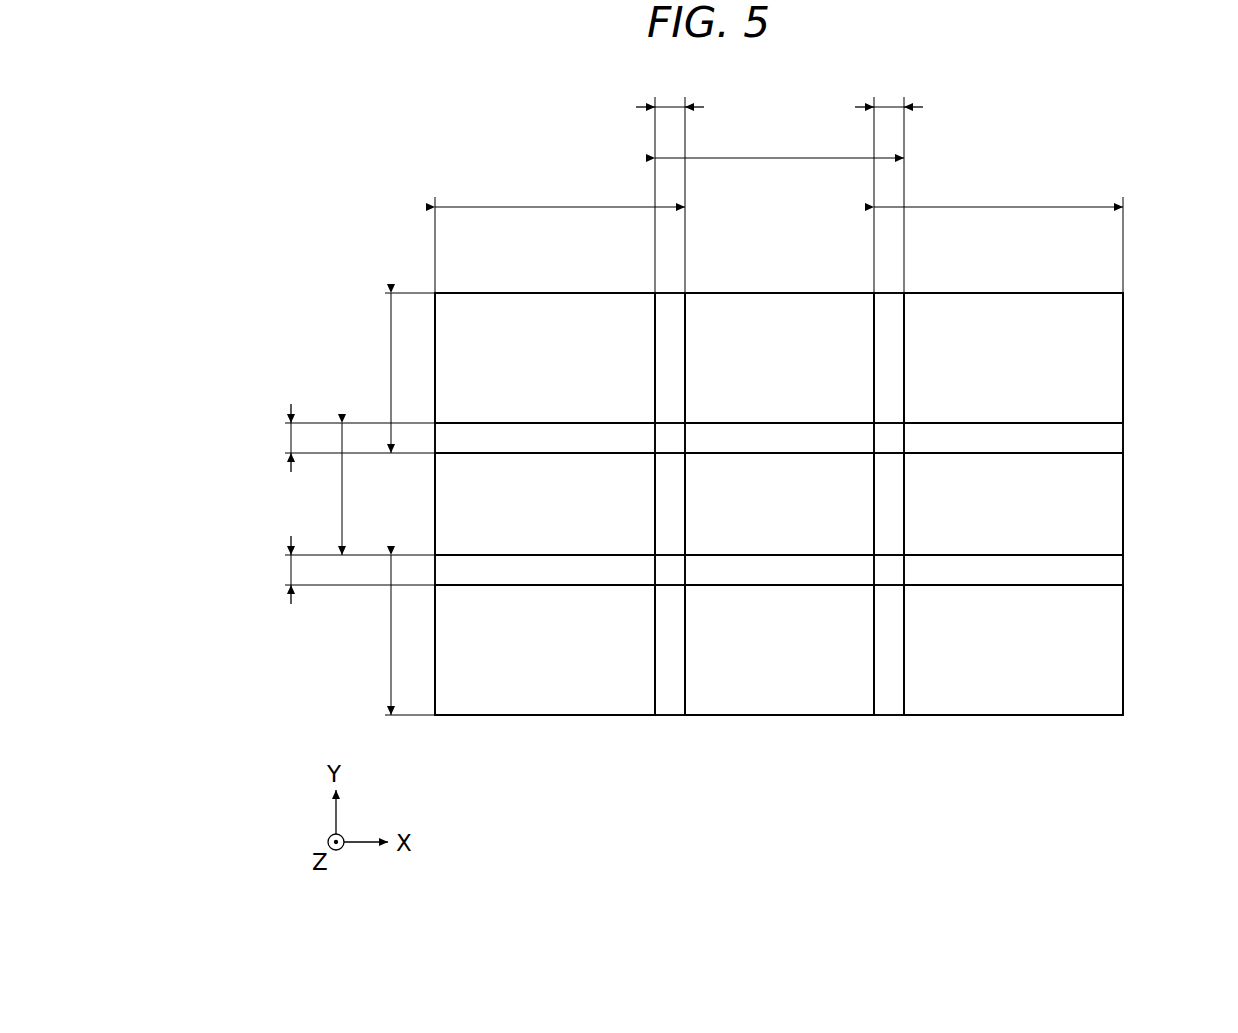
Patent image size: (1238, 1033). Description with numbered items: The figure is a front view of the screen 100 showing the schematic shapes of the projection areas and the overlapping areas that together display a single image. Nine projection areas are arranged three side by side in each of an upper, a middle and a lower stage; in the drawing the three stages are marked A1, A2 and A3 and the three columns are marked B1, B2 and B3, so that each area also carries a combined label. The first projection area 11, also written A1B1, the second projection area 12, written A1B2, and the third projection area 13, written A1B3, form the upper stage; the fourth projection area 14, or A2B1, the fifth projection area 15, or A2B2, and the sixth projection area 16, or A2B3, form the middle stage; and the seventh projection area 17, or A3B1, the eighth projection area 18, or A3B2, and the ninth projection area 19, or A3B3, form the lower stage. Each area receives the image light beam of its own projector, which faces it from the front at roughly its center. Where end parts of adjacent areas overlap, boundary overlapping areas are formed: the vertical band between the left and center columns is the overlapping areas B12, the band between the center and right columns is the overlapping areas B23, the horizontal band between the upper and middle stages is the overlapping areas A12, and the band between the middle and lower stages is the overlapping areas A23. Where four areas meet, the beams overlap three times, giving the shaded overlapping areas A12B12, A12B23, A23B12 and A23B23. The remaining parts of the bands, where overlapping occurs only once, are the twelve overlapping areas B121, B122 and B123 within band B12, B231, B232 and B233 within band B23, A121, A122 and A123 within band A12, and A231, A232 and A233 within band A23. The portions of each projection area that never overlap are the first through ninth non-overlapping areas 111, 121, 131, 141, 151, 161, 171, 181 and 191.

The screen 100 is at (410, 139).
The first projection area 11 is at (575, 308).
The first non-overlapping area 111 is at (525, 308).
The second projection area 12 is at (825, 308).
The second non-overlapping area 121 is at (775, 308).
The third projection area 13 is at (975, 308).
The third non-overlapping area 131 is at (1025, 308).
The fourth projection area 14 is at (457, 472).
The fourth non-overlapping area 141 is at (465, 507).
The fifth projection area 15 is at (827, 472).
The fifth non-overlapping area 151 is at (777, 485).
The sixth projection area 16 is at (1102, 478).
The sixth non-overlapping area 161 is at (1093, 510).
The seventh projection area 17 is at (582, 696).
The seventh non-overlapping area 171 is at (532, 686).
The eighth projection area 18 is at (830, 696).
The eighth non-overlapping area 181 is at (780, 686).
The ninth projection area 19 is at (980, 696).
The ninth non-overlapping area 191 is at (1030, 686).
The first row region height A1 is at (396, 373).
The overlapping areas A12 is at (339, 438).
The second row region height A2 is at (325, 489).
The overlapping areas A23 is at (339, 570).
The third row region height A3 is at (396, 635).
The first column region width B1 is at (560, 236).
The overlapping areas B12 is at (670, 186).
The second column region width B2 is at (779, 143).
The overlapping areas B23 is at (889, 185).
The third column region width B3 is at (998, 236).
The first projection area A1B1 is at (477, 308).
The second projection area A1B2 is at (727, 308).
The third projection area A1B3 is at (1075, 308).
The fourth projection area A2B1 is at (477, 537).
The fifth projection area A2B2 is at (732, 539).
The sixth projection area A2B3 is at (1085, 540).
The seventh projection area A3B1 is at (482, 678).
The eighth projection area A3B2 is at (732, 678).
The ninth projection area A3B3 is at (1080, 678).
The overlapping area A121 is at (510, 438).
The overlapping area A122 is at (727, 437).
The overlapping area A123 is at (1045, 437).
The overlapping area A231 is at (513, 572).
The overlapping area A232 is at (808, 570).
The overlapping area A233 is at (1053, 570).
The overlapping area B121 is at (670, 344).
The overlapping area B122 is at (670, 476).
The overlapping area B123 is at (670, 607).
The overlapping area B231 is at (890, 345).
The overlapping area B232 is at (890, 476).
The overlapping area B233 is at (890, 607).
The overlapping area A12B12 is at (670, 438).
The overlapping area A12B23 is at (890, 437).
The overlapping area A23B12 is at (670, 568).
The overlapping area A23B23 is at (890, 567).